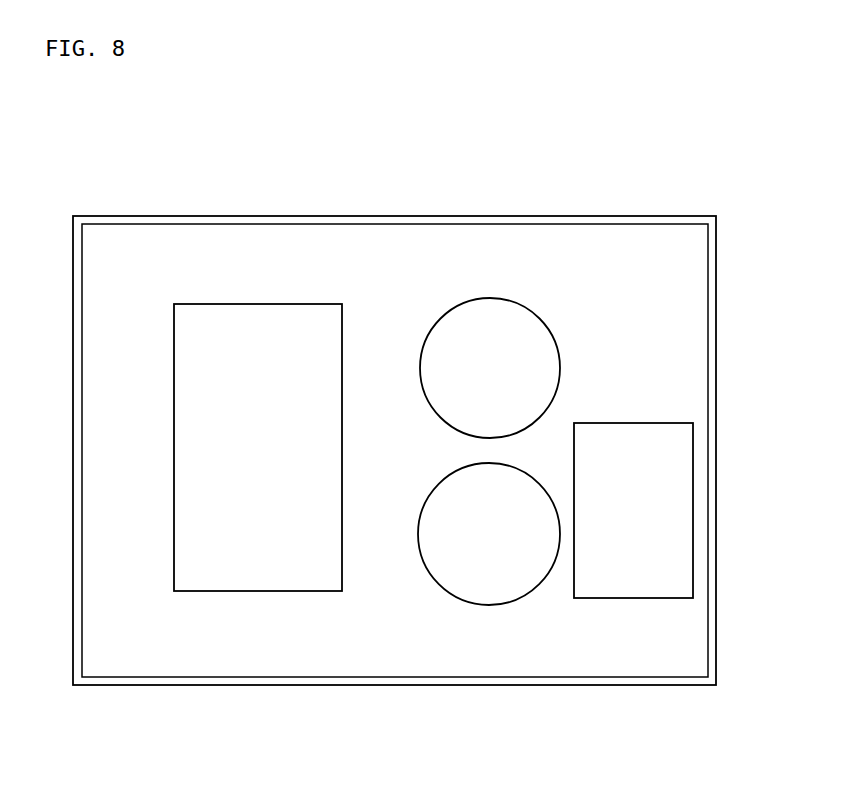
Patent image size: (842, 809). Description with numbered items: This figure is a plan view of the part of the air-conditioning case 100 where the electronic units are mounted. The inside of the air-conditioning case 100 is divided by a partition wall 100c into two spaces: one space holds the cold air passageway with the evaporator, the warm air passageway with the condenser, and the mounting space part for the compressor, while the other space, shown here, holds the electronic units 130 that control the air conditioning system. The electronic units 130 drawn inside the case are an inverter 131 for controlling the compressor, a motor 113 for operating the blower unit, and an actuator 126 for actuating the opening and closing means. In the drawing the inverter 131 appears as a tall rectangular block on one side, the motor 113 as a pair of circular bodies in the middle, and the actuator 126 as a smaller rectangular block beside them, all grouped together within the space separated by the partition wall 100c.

The air-conditioning case 100 is at (402, 403).
The partition wall 100c is at (113, 277).
The electronic units 130 is at (328, 138).
The inverter 131 is at (272, 325).
The motor 113 is at (440, 507).
The actuator 126 is at (598, 438).